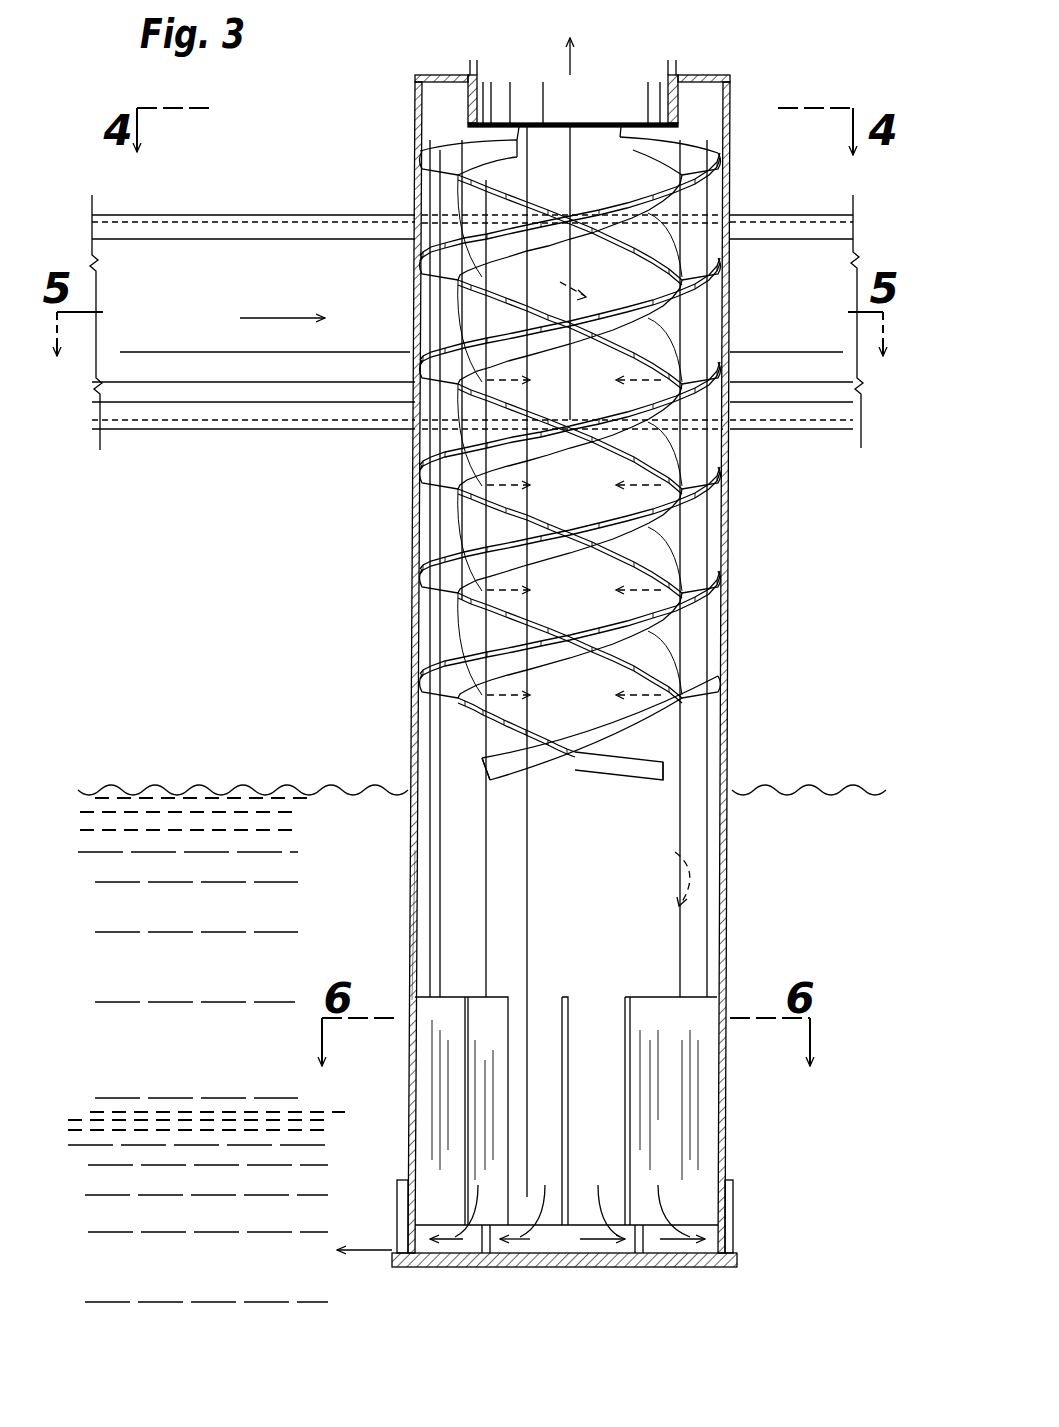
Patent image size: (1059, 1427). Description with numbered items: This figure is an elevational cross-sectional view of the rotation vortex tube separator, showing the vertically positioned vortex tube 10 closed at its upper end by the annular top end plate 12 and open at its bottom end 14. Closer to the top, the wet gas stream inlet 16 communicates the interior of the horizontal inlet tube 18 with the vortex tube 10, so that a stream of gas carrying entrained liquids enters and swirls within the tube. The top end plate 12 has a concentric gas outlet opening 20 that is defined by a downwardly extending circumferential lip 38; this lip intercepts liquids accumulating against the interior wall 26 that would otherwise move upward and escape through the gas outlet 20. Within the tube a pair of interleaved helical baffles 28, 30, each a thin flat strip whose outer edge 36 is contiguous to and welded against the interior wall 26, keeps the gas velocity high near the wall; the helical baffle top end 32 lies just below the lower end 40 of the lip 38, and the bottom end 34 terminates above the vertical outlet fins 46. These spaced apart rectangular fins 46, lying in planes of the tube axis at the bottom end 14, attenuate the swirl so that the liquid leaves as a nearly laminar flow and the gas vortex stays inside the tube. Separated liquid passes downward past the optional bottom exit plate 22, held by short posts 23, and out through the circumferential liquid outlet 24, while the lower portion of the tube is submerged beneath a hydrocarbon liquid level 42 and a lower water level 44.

The vortex tube 10 is at (728, 605).
The top end plate 12 is at (432, 73).
The bottom end 14 is at (577, 1228).
The wet gas stream inlet 16 is at (562, 471).
The inlet tube 18 is at (254, 213).
The gas outlet opening 20 is at (661, 95).
The bottom exit plate 22 is at (598, 1265).
The short posts 23 is at (400, 1193).
The circumferential liquid outlet 24 is at (668, 1240).
The interior wall 26 is at (423, 905).
The helical baffle 28 is at (718, 155).
The helical baffle 30 is at (455, 160).
The helical baffle top end 32 is at (515, 128).
The helical baffle bottom end 34 is at (476, 772).
The outer edge 36 is at (577, 528).
The circumferential lip 38 is at (470, 104).
The lower end of circumferential lip 40 is at (548, 126).
The liquid level 42 is at (272, 755).
The second water level 44 is at (237, 1110).
The vertical outlet fins 46 is at (448, 997).